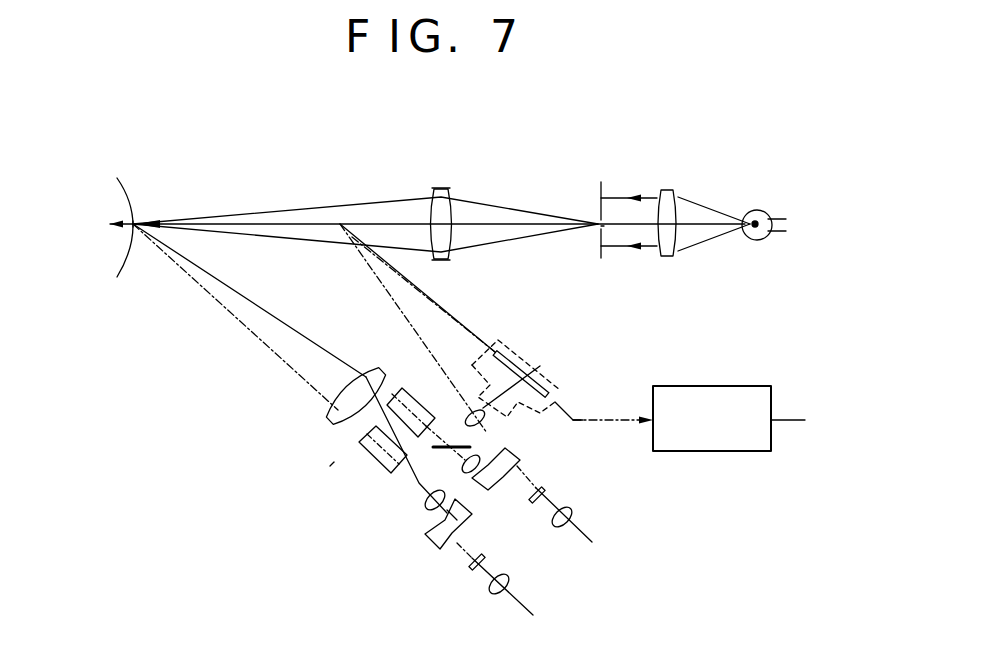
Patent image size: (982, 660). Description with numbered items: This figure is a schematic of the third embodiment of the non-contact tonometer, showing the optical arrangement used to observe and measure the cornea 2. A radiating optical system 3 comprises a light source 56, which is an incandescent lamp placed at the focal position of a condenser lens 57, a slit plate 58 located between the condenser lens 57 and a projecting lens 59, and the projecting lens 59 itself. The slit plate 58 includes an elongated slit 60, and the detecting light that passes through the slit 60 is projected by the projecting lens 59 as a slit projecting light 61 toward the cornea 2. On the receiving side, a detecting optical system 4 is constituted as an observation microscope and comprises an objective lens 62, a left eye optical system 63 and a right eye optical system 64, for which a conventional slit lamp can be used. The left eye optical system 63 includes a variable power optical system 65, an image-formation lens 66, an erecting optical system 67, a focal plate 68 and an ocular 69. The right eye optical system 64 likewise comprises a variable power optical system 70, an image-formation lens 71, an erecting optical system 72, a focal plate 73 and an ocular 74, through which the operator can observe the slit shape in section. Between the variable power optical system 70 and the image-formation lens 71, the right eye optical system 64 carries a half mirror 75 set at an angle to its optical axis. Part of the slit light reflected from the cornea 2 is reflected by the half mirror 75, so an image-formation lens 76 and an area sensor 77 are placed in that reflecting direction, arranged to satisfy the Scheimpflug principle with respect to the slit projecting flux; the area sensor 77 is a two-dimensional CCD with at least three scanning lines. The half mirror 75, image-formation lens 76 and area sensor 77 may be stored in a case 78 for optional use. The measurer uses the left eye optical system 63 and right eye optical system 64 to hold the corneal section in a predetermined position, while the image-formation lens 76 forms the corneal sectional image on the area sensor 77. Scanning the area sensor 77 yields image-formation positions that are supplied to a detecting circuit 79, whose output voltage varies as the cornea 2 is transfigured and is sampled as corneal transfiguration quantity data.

The cornea 2 is at (133, 206).
The radiating optical system 3 is at (549, 205).
The detecting optical system 4 is at (326, 474).
The light source 56 is at (759, 211).
The condenser lens 57 is at (668, 190).
The slit plate 58 is at (602, 190).
The projecting lens 59 is at (442, 188).
The slit 60 is at (602, 250).
The slit projecting light 61 is at (141, 221).
The objective lens 62 is at (329, 426).
The left eye optical system 63 is at (414, 541).
The right eye optical system 64 is at (540, 480).
The variable power optical system 65 is at (374, 463).
The image-formation lens 66 is at (424, 508).
The erecting optical system 67 is at (430, 540).
The focal plate 68 is at (470, 569).
The ocular 69 is at (495, 597).
The variable power optical system 70 is at (423, 400).
The image-formation lens 71 is at (483, 451).
The erecting optical system 72 is at (516, 456).
The focal plate 73 is at (546, 493).
The ocular 74 is at (575, 517).
The half mirror 75 is at (443, 448).
The image-formation lens 76 is at (477, 407).
The area sensor 77 is at (547, 382).
The case 78 is at (566, 392).
The detecting circuit 79 is at (736, 386).